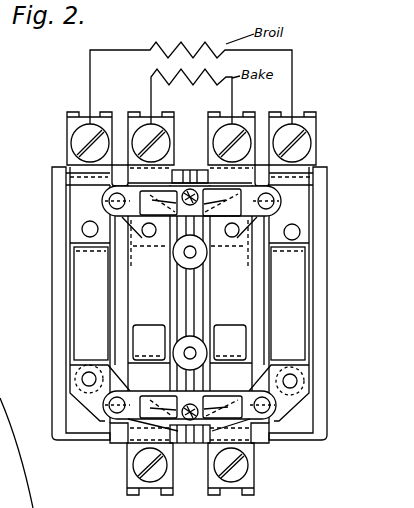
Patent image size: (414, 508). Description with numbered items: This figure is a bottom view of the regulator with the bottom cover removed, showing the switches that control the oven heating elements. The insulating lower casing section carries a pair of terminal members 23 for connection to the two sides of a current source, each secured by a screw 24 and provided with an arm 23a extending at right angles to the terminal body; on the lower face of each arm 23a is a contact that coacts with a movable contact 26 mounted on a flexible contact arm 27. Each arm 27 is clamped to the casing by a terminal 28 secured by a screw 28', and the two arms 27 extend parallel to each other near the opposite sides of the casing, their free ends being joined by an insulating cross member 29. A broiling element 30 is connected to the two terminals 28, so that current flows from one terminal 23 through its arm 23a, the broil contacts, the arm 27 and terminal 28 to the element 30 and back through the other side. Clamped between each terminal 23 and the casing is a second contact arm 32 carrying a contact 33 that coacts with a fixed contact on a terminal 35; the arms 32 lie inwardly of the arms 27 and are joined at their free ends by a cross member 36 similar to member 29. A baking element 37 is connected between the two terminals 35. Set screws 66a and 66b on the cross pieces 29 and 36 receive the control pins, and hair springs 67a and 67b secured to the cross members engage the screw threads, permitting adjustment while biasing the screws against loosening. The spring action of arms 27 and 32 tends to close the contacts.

The terminal member 23 is at (126, 476).
The arm 23a is at (338, 398).
The screw 24 is at (124, 441).
The movable contact 26 is at (341, 376).
The flexible contact arm 27 is at (80, 300).
The terminal 28 is at (184, 149).
The screw 28' is at (188, 230).
The cross member 29 is at (108, 419).
The broiling element 30 is at (182, 40).
The contact arm 32 is at (190, 288).
The contact 33 is at (189, 250).
The terminal 35 is at (128, 112).
The cross member 36 is at (110, 200).
The baking element 37 is at (157, 74).
The set screw 66a is at (197, 410).
The set screw 66b is at (194, 170).
The hair spring 67a is at (165, 407).
The hair spring 67b is at (165, 205).